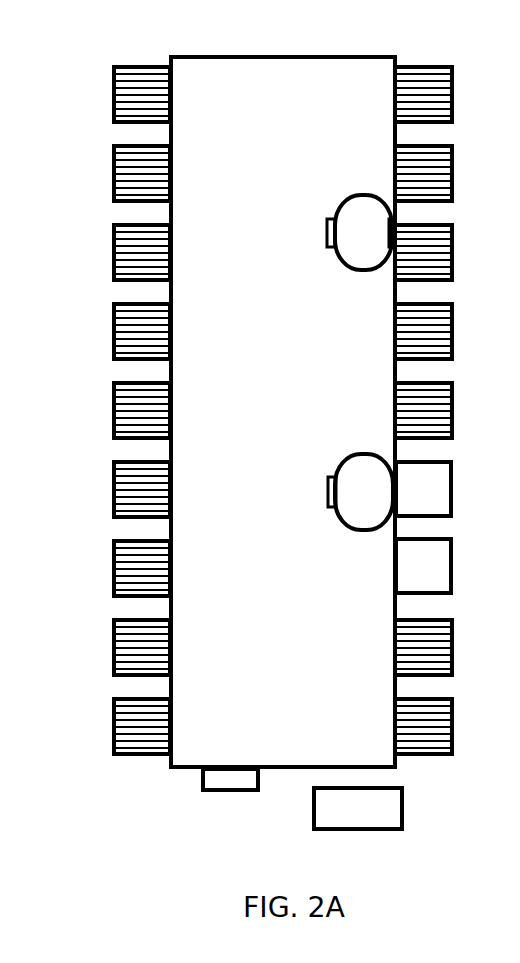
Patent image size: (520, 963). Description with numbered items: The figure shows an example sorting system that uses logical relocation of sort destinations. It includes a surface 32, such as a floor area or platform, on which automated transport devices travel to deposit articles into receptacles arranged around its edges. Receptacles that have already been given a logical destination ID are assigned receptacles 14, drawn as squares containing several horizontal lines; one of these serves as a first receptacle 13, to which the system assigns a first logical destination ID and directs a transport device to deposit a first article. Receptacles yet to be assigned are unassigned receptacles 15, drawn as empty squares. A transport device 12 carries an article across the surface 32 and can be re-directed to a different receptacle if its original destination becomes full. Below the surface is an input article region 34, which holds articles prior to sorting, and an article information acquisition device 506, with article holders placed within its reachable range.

The surface 32 is at (318, 57).
The assigned receptacles 14 is at (115, 333).
The first receptacle 13 is at (455, 460).
The unassigned receptacles 15 is at (457, 562).
The transport device 12 is at (343, 207).
The article information acquisition device 506 is at (233, 765).
The input article region 34 is at (400, 806).